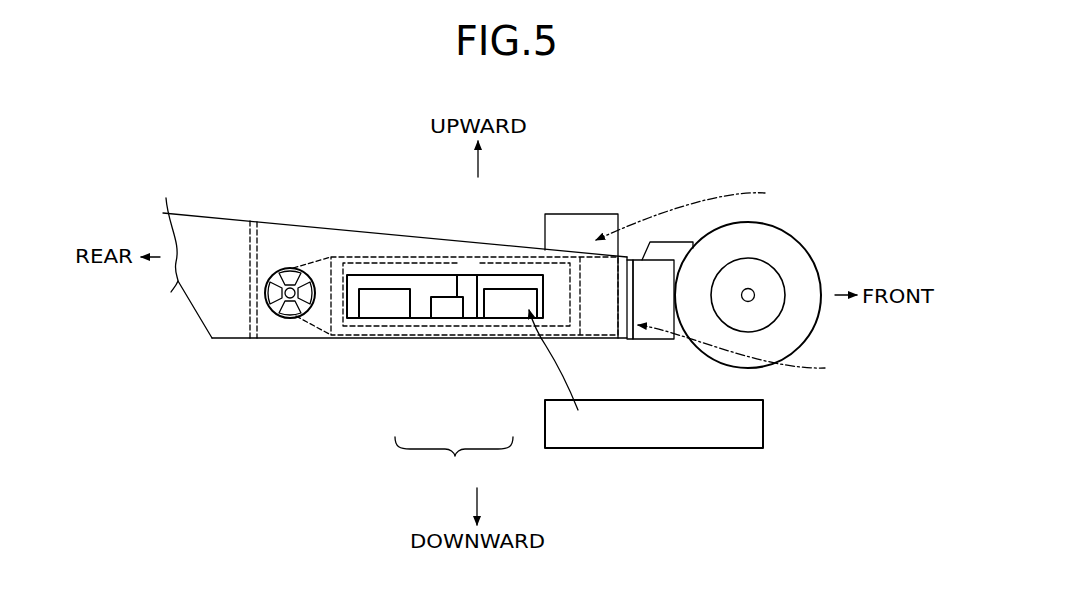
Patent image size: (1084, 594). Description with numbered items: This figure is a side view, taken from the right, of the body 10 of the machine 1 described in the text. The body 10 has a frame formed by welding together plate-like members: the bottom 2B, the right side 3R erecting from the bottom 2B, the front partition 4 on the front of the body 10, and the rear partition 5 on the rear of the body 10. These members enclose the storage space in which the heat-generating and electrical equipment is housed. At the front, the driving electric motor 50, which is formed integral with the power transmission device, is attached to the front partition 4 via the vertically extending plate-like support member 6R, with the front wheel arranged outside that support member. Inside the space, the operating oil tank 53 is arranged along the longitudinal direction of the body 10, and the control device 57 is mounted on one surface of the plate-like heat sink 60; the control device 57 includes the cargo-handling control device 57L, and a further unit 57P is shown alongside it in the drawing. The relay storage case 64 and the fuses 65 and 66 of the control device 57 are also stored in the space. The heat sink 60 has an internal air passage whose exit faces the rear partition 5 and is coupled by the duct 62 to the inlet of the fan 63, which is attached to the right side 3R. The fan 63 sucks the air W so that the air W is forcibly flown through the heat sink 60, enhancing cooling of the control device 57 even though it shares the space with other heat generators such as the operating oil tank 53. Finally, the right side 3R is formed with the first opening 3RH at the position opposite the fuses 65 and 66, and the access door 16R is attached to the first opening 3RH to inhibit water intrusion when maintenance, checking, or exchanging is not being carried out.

The vehicle 1 is at (248, 141).
The right side 3R is at (276, 237).
The bottom 2B is at (342, 341).
The body 10 is at (187, 316).
The rear partition 5 is at (247, 232).
The fan 63 is at (290, 310).
The duct 62 is at (313, 266).
The heat sink 60 is at (357, 262).
The first opening 3RH is at (430, 285).
The fuse 66 is at (382, 310).
The fuse 65 is at (450, 310).
The relay storage case 64 is at (520, 312).
The cargo-handling control device 57L is at (422, 312).
The power electronic unit 57P is at (495, 283).
The control device 57 is at (454, 457).
The operating oil tank 53 is at (594, 222).
The front partition 4 is at (632, 341).
The support member 6R is at (666, 267).
The driving electric motor 50 is at (660, 250).
The air W is at (723, 283).
The access door 16R is at (700, 448).